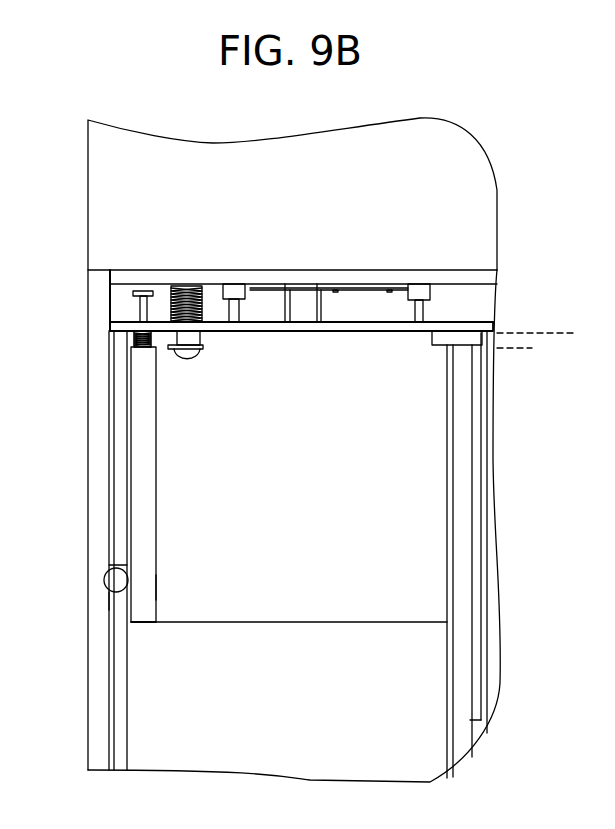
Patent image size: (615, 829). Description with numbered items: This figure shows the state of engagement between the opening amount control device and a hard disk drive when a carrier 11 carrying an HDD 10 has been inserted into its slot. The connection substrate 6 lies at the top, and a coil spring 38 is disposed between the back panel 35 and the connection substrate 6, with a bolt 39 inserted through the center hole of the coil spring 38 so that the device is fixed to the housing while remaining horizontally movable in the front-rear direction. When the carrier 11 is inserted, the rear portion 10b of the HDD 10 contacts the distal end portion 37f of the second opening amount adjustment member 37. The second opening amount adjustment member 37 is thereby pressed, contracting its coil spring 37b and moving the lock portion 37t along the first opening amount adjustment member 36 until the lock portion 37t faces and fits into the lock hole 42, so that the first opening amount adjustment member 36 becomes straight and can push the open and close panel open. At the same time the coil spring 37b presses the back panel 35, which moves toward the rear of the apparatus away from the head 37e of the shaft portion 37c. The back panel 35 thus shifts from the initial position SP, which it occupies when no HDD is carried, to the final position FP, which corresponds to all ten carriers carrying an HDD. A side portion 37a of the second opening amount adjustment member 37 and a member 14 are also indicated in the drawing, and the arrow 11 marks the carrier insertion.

The connection substrate 6 is at (450, 272).
The HDD 10 is at (418, 680).
The rear portion of the HDD 10b is at (318, 620).
The carrier 11 is at (425, 448).
The guide member 14 is at (418, 532).
The back panel 35 is at (115, 324).
The first opening amount adjustment member 36 is at (110, 511).
The second opening amount adjustment member 37 is at (131, 440).
The rod side portion 37a is at (143, 590).
The coil spring 37b is at (128, 343).
The shaft portion 37c is at (138, 315).
The head of the shaft portion 37e is at (142, 291).
The distal end portion 37f is at (147, 622).
The lock portion 37t is at (104, 578).
The coil spring 38 is at (186, 286).
The bolt 39 is at (188, 340).
The lock hole 42 is at (110, 600).
The final position FP is at (551, 334).
The initial position SP is at (529, 351).